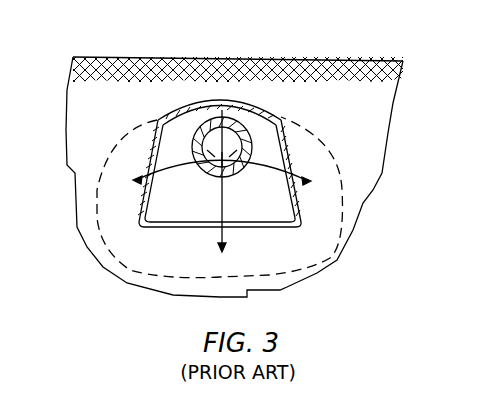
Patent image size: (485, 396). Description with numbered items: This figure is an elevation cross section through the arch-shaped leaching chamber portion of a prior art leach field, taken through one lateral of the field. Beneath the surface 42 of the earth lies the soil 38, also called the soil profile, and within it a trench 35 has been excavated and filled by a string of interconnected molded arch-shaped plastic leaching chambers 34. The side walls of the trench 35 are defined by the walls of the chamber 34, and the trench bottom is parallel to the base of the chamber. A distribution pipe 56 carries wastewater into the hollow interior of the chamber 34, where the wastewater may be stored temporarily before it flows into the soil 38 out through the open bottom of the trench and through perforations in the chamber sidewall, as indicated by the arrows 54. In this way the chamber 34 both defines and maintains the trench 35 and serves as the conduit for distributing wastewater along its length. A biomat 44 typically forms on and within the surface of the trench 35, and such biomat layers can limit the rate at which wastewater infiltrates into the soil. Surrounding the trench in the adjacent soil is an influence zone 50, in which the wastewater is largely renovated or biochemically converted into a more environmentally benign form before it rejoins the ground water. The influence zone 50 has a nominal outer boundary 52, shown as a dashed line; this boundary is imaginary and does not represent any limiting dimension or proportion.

The leaching chamber 34 is at (283, 116).
The trench 35 is at (298, 198).
The soil 38 is at (105, 100).
The surface 42 is at (167, 56).
The biomat 44 is at (139, 197).
The influence zone 50 is at (327, 156).
The outer boundary 52 is at (78, 226).
The arrows 54 is at (95, 128).
The distribution pipe 56 is at (222, 110).